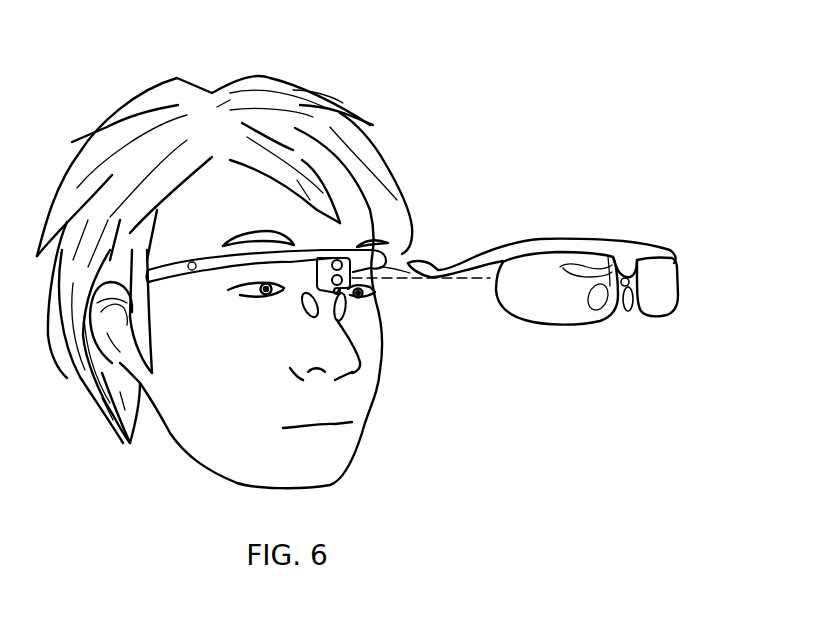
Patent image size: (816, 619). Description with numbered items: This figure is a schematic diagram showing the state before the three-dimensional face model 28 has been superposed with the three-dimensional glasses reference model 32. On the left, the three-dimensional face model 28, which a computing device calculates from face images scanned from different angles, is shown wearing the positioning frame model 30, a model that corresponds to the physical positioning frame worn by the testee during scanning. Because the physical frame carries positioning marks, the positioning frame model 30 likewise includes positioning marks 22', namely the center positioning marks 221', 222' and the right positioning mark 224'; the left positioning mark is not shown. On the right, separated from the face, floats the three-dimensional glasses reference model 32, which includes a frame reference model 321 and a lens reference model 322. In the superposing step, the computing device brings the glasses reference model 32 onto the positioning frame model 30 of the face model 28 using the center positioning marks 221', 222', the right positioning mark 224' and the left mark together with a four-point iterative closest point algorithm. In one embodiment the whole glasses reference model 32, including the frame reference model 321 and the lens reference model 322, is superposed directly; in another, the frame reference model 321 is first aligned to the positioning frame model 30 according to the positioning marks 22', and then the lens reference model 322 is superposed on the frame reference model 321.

The positioning marks 22' is at (267, 167).
The right positioning mark 224' is at (267, 162).
The center positioning mark 222' is at (312, 167).
The center positioning mark 221' is at (332, 182).
The positioning frame model 30 is at (352, 269).
The 3D face model 28 is at (370, 398).
The 3D glasses reference model 32 is at (557, 259).
The frame reference model 321 is at (625, 255).
The lens reference model 322 is at (553, 260).